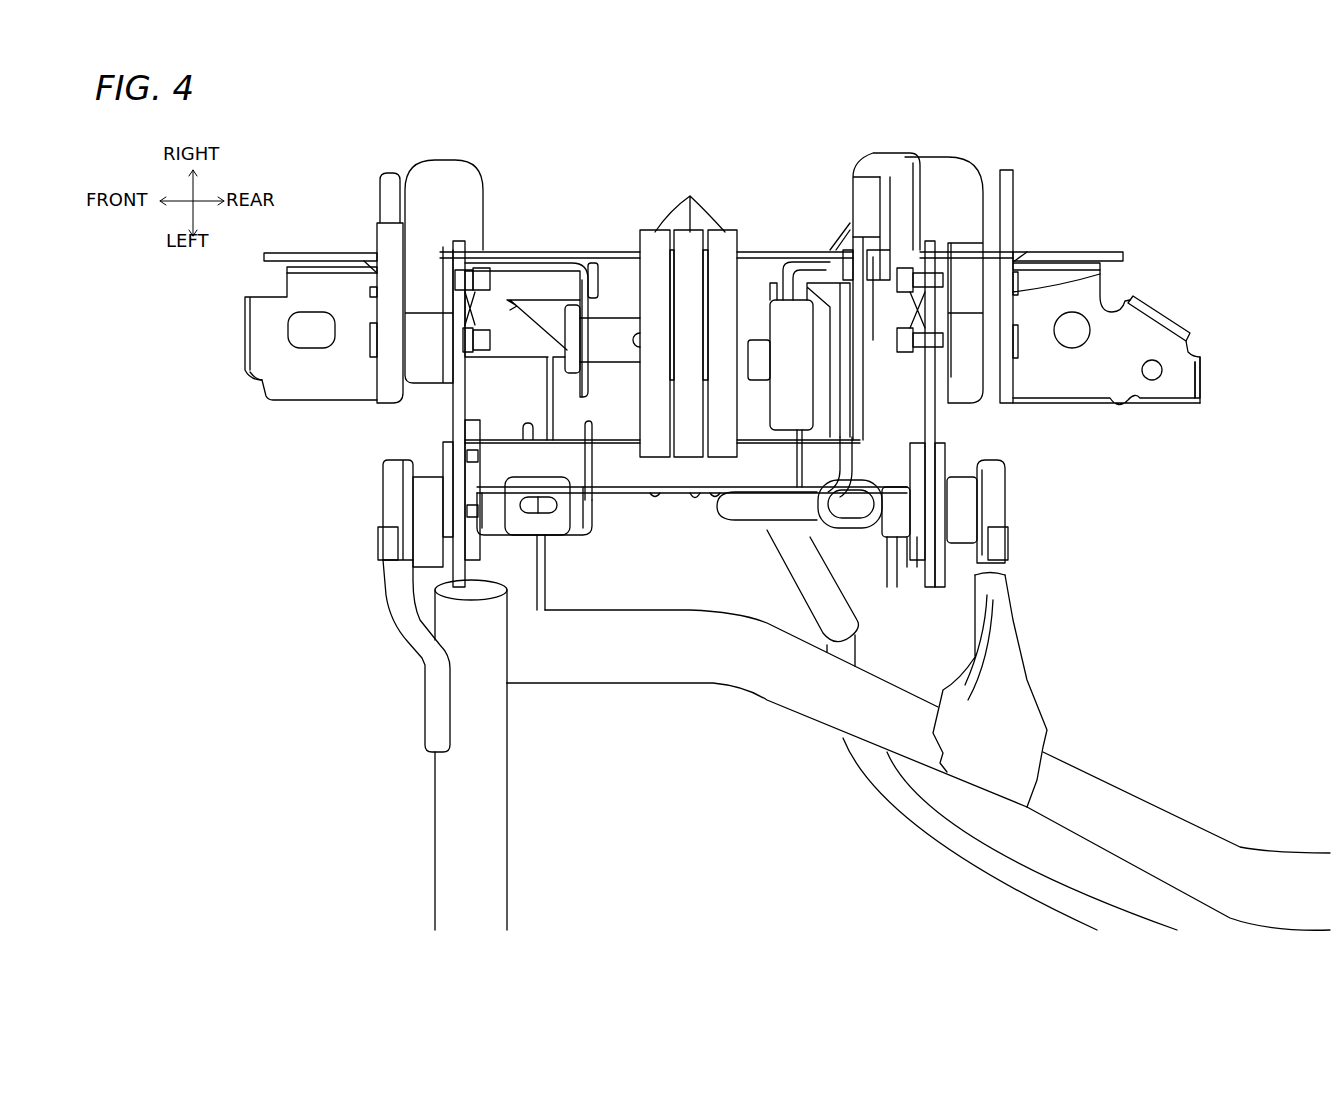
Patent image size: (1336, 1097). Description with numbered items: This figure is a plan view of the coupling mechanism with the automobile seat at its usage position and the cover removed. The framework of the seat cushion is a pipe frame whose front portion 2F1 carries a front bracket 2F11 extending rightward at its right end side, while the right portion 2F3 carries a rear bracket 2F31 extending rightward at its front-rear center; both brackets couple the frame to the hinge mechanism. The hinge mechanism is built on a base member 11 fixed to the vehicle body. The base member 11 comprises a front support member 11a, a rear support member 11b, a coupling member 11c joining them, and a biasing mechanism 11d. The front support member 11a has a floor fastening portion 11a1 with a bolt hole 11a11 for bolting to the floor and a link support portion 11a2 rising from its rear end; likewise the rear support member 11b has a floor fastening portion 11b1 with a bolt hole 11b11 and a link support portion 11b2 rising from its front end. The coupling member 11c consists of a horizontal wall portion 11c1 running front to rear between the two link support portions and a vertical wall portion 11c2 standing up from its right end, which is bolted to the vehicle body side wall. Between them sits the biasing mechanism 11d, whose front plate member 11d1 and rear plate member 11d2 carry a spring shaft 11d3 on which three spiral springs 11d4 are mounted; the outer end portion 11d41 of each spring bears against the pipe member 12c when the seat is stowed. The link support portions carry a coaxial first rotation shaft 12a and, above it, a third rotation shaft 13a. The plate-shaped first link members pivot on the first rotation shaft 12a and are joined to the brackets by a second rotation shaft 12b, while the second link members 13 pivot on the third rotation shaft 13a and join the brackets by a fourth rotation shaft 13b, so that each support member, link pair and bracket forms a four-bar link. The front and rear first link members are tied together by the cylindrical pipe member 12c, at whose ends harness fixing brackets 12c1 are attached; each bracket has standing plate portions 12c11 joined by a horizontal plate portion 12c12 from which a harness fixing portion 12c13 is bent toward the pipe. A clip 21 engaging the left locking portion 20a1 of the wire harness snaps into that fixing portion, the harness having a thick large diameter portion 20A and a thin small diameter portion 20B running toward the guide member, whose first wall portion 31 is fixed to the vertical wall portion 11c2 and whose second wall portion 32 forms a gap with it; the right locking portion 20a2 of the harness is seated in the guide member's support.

The base member 11 is at (703, 312).
The front support member 11a is at (280, 301).
The floor fastening portion 11a1 is at (265, 384).
The bolt hole 11a11 is at (308, 323).
The link support portion 11a2 is at (377, 240).
The rear support member 11b is at (1124, 312).
The floor fastening portion 11b1 is at (1180, 403).
The bolt hole 11b11 is at (1078, 325).
The link support portion 11b2 is at (1013, 240).
The coupling member 11c is at (617, 250).
The horizontal wall portion 11c1 is at (512, 345).
The vertical wall portion 11c2 is at (762, 250).
The biasing mechanism 11d is at (661, 214).
The front plate member 11d1 is at (590, 298).
The rear plate member 11d2 is at (783, 270).
The spring shaft 11d3 is at (603, 366).
The spiral springs 11d4 is at (690, 197).
The outer end portion 11d41 is at (725, 495).
The first rotation shaft 12a is at (497, 338).
The second rotation shaft 12b is at (470, 590).
The pipe member 12c is at (605, 495).
The harness fixing bracket 12c1 is at (545, 553).
The standing plate portions 12c11 is at (403, 465).
The horizontal plate portion 12c12 is at (485, 570).
The harness fixing portion 12c13 is at (465, 462).
The second link member 13 is at (453, 413).
The third rotation shaft 13a is at (485, 268).
The fourth rotation shaft 13b is at (450, 510).
The large diameter portion 20A is at (905, 160).
The small diameter portion 20B is at (875, 423).
The left locking portion 20a1 is at (748, 517).
The right locking portion 20a2 is at (853, 200).
The clip 21 is at (877, 480).
The first wall portion 31 is at (1015, 302).
The second wall portion 32 is at (783, 330).
The front portion 2F1 is at (433, 790).
The front bracket 2F11 is at (408, 642).
The right portion 2F3 is at (1183, 815).
The rear bracket 2F31 is at (1030, 655).